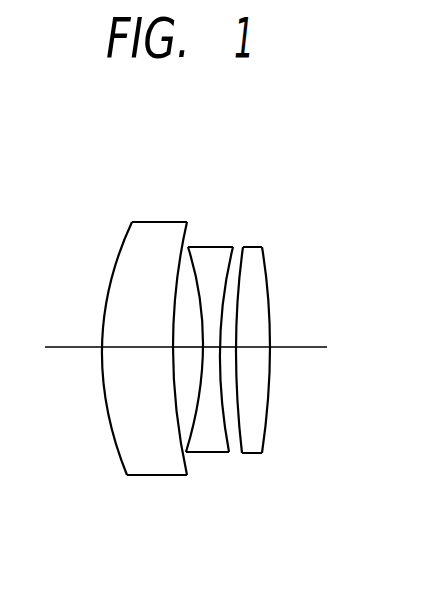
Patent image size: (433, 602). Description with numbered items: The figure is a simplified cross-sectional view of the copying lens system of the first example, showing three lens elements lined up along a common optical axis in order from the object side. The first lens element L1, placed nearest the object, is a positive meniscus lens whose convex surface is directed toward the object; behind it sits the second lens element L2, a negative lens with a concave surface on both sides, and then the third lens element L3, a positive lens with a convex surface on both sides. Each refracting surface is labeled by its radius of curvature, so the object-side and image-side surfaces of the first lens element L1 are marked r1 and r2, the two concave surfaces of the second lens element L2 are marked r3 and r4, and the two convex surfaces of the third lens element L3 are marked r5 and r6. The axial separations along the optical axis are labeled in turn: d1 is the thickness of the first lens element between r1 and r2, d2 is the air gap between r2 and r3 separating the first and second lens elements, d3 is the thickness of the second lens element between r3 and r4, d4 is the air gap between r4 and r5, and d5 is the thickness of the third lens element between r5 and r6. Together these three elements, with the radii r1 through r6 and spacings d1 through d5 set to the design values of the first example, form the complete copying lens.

The first lens element L1 is at (114, 290).
The second lens element L2 is at (144, 280).
The third lens element L3 is at (181, 281).
The radius of curvature of surface one r1 is at (132, 222).
The radius of curvature of surface two r2 is at (174, 290).
The radius of curvature of surface three r3 is at (190, 247).
The radius of curvature of surface four r4 is at (233, 280).
The radius of curvature of surface five r5 is at (245, 247).
The radius of curvature of surface six r6 is at (291, 281).
The axial distance after surface one d1 is at (142, 349).
The axial distance after surface two d2 is at (187, 349).
The axial distance after surface three d3 is at (207, 349).
The axial distance after surface four d4 is at (228, 349).
The axial distance after surface five d5 is at (250, 349).